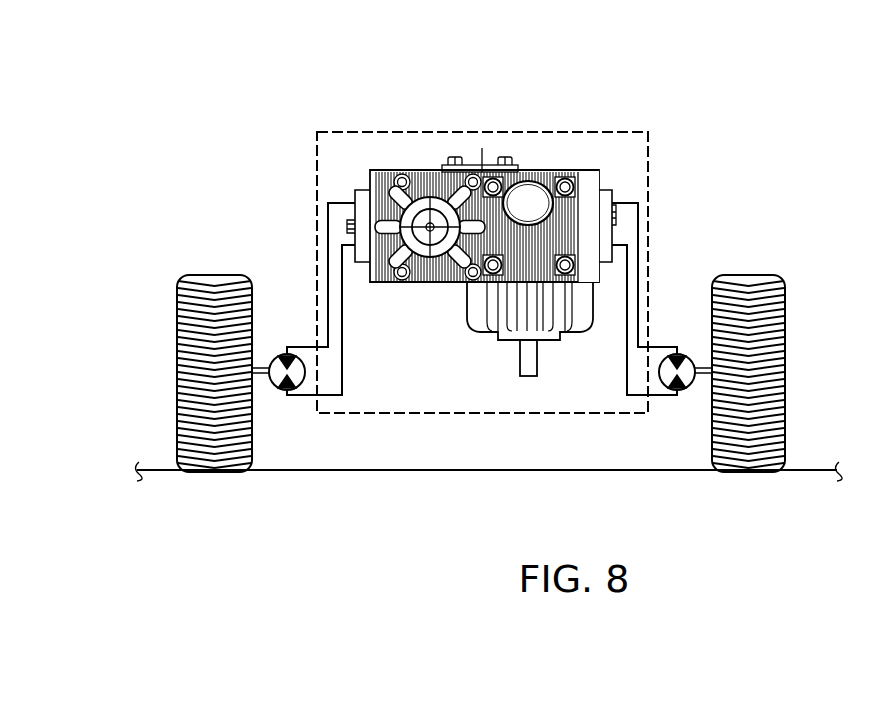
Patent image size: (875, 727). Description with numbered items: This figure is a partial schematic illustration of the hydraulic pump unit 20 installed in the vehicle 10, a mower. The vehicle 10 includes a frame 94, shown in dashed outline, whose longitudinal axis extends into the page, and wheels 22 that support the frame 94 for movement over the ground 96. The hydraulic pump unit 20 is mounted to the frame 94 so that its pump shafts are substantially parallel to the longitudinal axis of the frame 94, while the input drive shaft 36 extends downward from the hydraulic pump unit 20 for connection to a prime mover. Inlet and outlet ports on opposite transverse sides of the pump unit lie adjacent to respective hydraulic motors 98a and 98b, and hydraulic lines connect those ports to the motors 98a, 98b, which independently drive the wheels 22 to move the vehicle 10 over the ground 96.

The vehicle 10 is at (287, 106).
The frame 94 is at (565, 131).
The hydraulic pump unit 20 is at (560, 172).
The input drive shaft 36 is at (527, 368).
The hydraulic motor 98a is at (680, 354).
The hydraulic motor 98b is at (284, 354).
The wheels 22 is at (178, 347).
The ground 96 is at (400, 476).